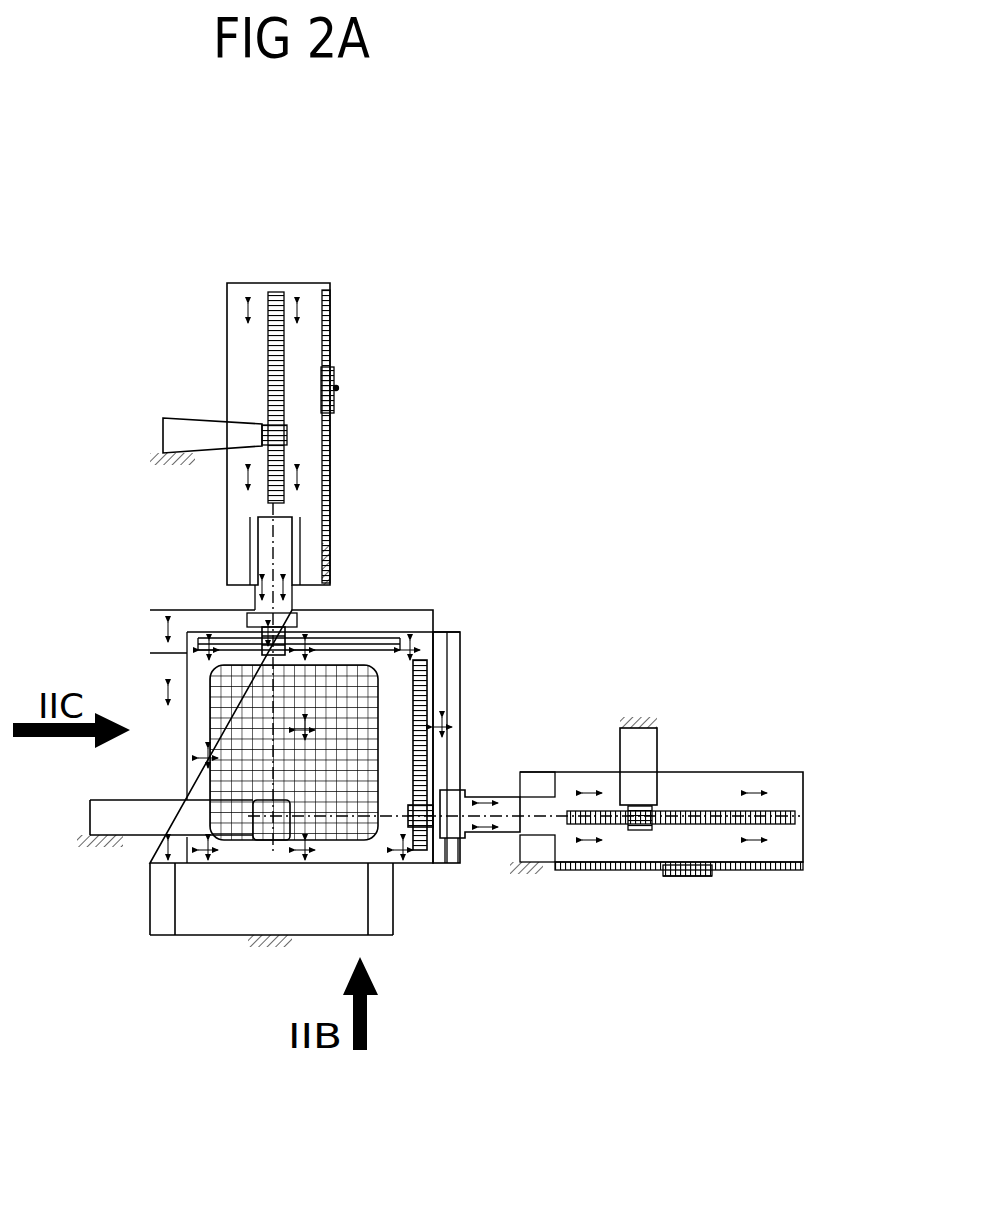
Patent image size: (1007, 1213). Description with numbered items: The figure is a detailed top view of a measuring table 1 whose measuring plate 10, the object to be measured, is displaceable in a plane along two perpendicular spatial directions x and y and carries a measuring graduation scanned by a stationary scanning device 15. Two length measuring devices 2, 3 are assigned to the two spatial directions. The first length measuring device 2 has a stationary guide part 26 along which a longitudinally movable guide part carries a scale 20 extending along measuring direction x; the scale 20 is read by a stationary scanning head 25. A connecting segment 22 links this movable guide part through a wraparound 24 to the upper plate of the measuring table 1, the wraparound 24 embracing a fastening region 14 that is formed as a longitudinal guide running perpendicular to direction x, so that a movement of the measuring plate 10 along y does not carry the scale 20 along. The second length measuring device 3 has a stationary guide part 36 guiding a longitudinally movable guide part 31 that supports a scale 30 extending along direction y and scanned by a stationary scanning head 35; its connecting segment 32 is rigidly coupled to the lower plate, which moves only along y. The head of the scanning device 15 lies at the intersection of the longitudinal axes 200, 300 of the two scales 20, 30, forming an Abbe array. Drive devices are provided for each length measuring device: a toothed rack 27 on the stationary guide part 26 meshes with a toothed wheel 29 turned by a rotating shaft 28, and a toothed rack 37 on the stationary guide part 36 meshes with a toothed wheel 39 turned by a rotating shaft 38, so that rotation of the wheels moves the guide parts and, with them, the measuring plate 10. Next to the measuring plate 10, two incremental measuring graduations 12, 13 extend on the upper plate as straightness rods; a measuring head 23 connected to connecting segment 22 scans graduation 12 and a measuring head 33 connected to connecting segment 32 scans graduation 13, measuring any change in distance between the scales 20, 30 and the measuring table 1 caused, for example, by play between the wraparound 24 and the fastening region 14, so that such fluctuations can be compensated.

The measuring table 1 is at (148, 663).
The length measuring device 2 is at (806, 796).
The length measuring device 3 is at (342, 296).
The measuring plate 10 is at (235, 752).
The incremental measuring graduation 12 is at (430, 673).
The incremental measuring graduation 13 is at (240, 643).
The fastening region 14 is at (447, 693).
The scanning device 15 is at (262, 825).
The scale 20 is at (705, 812).
The connecting segment 22 is at (497, 798).
The measuring head 23 is at (457, 788).
The wraparound 24 is at (458, 834).
The scanning head 25 is at (643, 807).
The stationary guide part 26 is at (538, 853).
The toothed rack 27 is at (782, 872).
The rotating shaft 28 is at (688, 876).
The toothed wheel 29 is at (707, 874).
The scale 30 is at (272, 377).
The longitudinally movable guide part 31 is at (243, 338).
The connecting segment 32 is at (280, 558).
The measuring head 33 is at (293, 618).
The scanning head 35 is at (267, 430).
The stationary guide part 36 is at (312, 528).
The toothed rack 37 is at (330, 328).
The rotating shaft 38 is at (338, 390).
The toothed wheel 39 is at (335, 377).
The longitudinal axis 200 is at (518, 815).
The longitudinal axis 300 is at (270, 540).